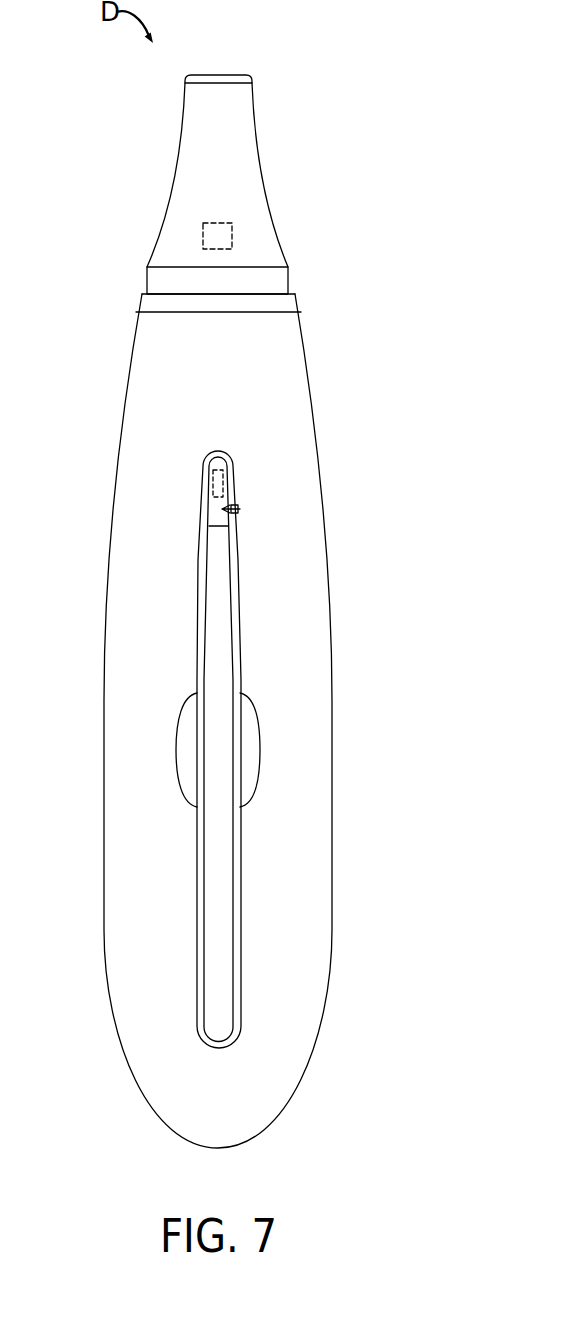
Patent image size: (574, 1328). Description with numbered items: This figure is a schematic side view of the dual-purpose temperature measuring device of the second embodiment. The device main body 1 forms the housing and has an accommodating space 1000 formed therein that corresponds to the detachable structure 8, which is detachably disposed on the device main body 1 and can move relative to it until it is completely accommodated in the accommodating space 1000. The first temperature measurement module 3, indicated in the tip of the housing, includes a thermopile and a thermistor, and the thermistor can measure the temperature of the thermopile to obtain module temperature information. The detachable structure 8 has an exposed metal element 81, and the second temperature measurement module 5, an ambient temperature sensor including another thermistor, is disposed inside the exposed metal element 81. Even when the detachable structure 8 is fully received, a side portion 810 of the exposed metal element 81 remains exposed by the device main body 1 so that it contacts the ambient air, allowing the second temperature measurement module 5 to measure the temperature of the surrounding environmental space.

The device main body 1 is at (120, 402).
The first temperature measurement module 3 is at (232, 237).
The second temperature measurement module 5 is at (222, 483).
The detachable structure 8 is at (228, 650).
The exposed metal element 81 is at (217, 517).
The side portion 810 is at (240, 509).
The accommodating space 1000 is at (201, 857).